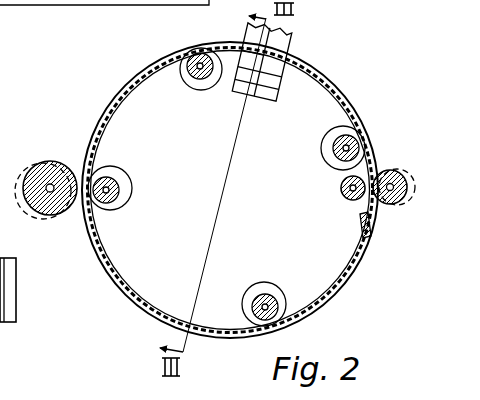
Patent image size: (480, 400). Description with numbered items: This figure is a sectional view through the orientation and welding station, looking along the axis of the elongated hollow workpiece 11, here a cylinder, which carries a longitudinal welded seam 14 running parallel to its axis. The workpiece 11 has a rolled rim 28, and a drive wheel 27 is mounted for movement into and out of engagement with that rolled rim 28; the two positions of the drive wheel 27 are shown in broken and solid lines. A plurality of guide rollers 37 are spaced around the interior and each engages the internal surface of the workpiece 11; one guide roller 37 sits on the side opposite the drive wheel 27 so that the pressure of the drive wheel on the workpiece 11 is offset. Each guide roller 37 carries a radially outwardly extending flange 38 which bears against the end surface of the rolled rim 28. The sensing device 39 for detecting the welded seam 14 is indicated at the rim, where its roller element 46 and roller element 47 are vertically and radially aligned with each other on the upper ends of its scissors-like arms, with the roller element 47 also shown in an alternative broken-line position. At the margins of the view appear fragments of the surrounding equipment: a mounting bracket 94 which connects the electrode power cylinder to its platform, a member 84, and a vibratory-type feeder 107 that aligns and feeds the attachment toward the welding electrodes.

The workpiece 11 is at (140, 303).
The welded seam 14 is at (366, 244).
The drive wheel 27 is at (24, 172).
The rolled rim 28 is at (105, 268).
The guide rollers 37 is at (110, 181).
The flange 38 is at (130, 206).
The sensing device 39 is at (378, 128).
The roller element 46 is at (340, 190).
The roller element 47 is at (382, 174).
The frame part 84 is at (15, 395).
The mounting bracket 94 is at (0, 352).
The vibratory-type feeder 107 is at (0, 60).